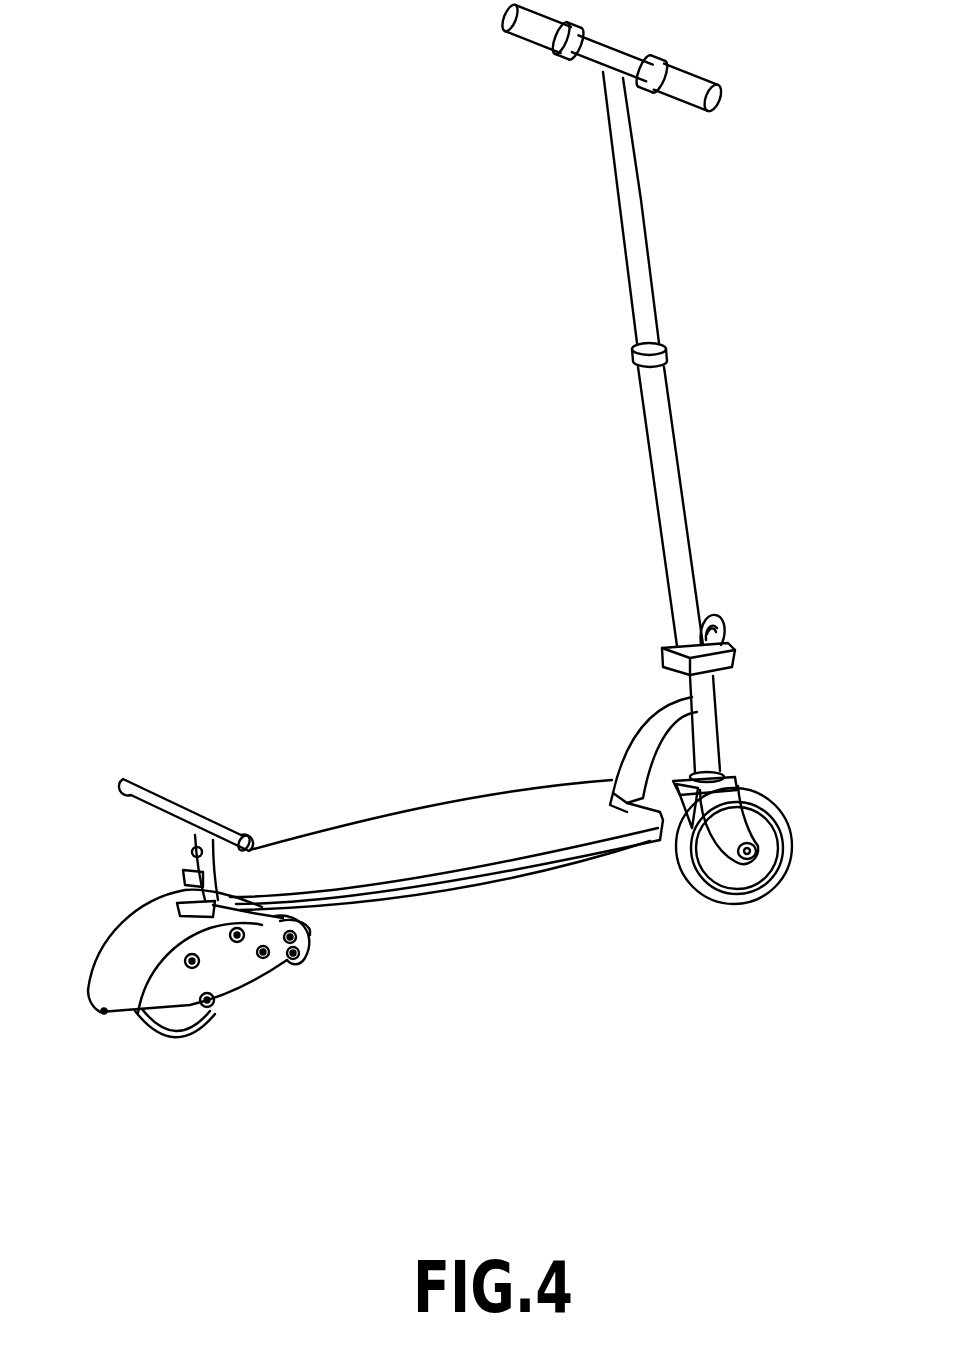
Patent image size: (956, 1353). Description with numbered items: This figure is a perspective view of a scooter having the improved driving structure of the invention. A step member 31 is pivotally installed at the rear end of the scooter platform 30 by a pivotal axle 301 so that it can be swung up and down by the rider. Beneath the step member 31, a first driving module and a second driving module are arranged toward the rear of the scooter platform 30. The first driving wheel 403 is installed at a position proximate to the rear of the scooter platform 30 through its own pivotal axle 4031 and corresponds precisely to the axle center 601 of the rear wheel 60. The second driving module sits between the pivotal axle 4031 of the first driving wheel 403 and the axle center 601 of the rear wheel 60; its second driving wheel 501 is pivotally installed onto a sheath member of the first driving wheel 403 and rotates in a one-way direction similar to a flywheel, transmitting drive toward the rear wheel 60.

The scooter platform 30 is at (283, 905).
The step member 31 is at (165, 802).
The pivotal axle 301 is at (239, 940).
The first driving wheel 403 is at (307, 942).
The pivotal axle 4031 is at (300, 958).
The second driving wheel 501 is at (307, 927).
The rear wheel 60 is at (158, 1030).
The axle center 601 is at (196, 1030).